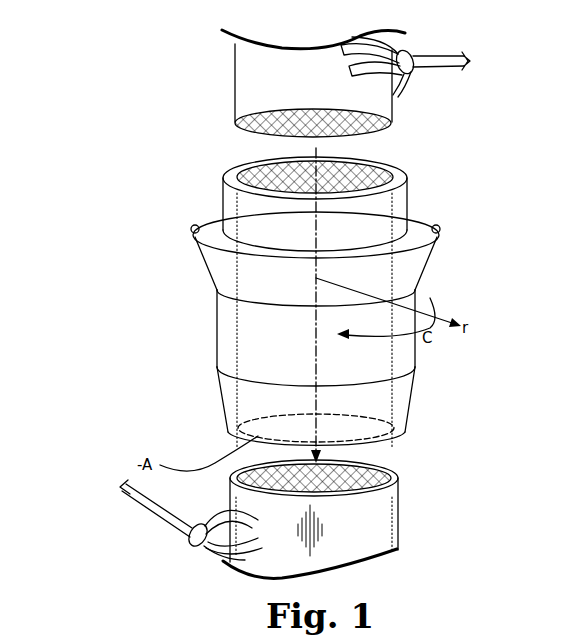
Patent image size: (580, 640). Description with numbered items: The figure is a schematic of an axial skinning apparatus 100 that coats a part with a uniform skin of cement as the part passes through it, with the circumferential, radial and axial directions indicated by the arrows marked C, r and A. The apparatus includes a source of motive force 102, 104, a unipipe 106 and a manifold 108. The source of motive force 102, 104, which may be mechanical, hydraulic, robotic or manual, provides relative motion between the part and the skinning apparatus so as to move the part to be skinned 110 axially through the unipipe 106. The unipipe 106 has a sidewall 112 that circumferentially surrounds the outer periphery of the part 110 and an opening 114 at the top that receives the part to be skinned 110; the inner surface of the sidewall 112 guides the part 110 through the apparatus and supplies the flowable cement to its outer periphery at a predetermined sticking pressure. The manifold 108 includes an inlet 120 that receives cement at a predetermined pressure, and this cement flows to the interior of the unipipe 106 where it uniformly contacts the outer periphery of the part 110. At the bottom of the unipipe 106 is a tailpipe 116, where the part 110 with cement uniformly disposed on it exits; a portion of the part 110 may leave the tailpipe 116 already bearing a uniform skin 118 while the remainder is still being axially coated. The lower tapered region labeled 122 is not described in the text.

The axial skinning apparatus 100 is at (95, 191).
The source of motive force 102 is at (420, 45).
The source of motive force 104 is at (190, 540).
The unipipe 106 is at (407, 190).
The manifold 108 is at (197, 249).
The part to be skinned 110 is at (232, 52).
The sidewall 112 is at (221, 201).
The opening 114 is at (379, 162).
The tailpipe 116 is at (217, 350).
The uniform skin 118 is at (398, 512).
The inlet 120 is at (192, 226).
The tapered end 122 is at (404, 392).